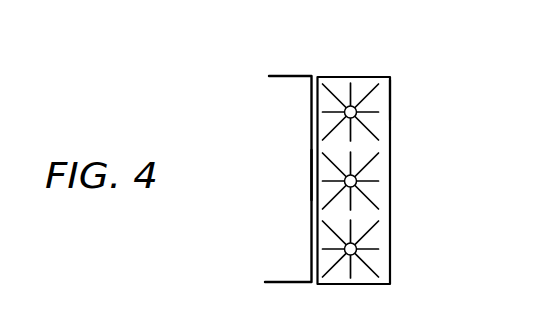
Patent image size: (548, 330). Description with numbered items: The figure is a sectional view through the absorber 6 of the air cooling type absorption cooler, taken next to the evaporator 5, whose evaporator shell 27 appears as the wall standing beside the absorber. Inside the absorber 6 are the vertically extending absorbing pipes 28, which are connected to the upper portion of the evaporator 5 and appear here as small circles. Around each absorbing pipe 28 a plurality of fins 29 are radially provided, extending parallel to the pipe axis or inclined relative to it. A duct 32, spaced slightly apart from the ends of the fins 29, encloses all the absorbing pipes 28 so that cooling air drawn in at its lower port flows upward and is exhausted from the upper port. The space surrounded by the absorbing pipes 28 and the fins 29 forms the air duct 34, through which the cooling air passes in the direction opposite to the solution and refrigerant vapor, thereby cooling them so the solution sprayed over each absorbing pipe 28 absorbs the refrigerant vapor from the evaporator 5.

The evaporator 5 is at (285, 75).
The absorber 6 is at (342, 76).
The evaporator shell 27 is at (310, 166).
The absorbing pipe 28 is at (357, 115).
The fin 29 is at (354, 89).
The duct 32 is at (391, 93).
The air duct 34 is at (368, 157).